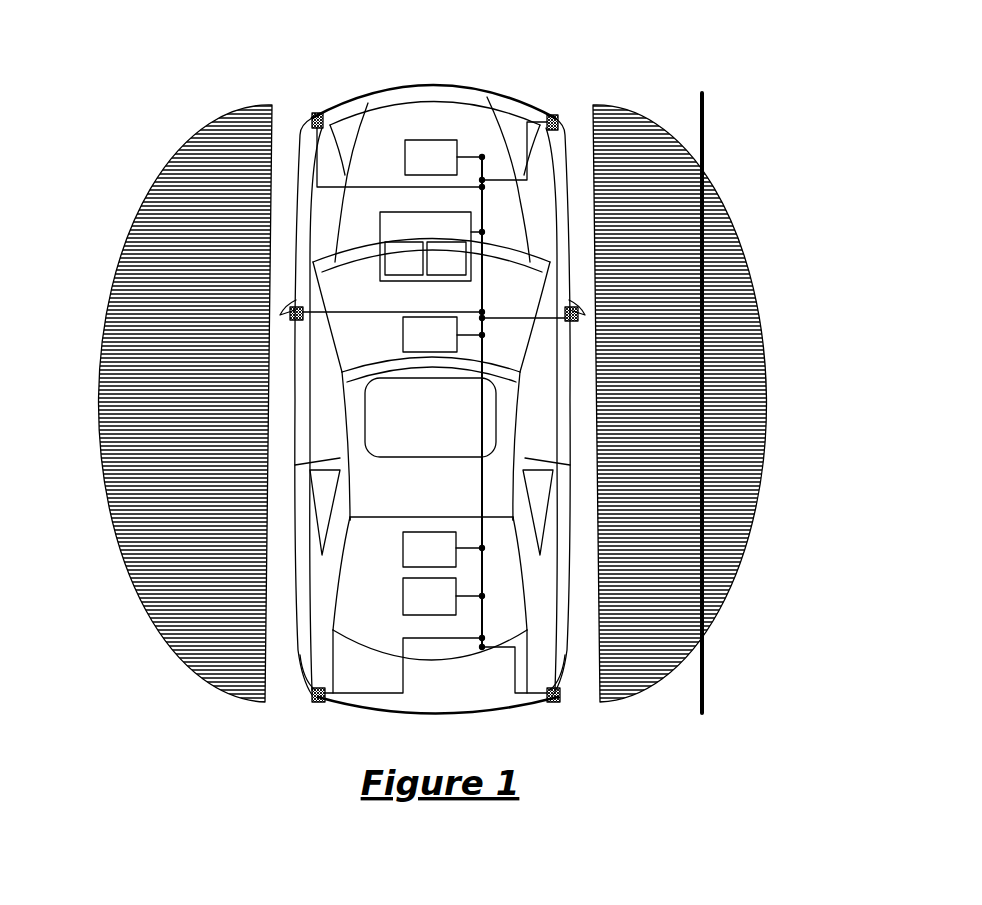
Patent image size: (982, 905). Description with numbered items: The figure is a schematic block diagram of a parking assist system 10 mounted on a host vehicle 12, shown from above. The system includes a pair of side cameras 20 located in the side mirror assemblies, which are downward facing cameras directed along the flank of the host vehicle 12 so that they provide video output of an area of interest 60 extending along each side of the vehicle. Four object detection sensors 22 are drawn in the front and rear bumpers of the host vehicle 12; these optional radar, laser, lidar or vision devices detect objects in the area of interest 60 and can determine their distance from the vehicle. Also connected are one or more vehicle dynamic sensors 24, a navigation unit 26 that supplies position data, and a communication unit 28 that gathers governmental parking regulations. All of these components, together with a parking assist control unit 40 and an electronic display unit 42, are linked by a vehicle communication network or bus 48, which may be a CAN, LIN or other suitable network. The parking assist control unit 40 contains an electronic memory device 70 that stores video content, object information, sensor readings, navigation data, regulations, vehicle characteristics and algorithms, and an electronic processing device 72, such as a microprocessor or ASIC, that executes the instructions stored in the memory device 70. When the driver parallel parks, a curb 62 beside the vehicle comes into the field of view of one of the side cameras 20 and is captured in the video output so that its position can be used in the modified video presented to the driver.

The parking assist system 10 is at (790, 128).
The host vehicle 12 is at (372, 74).
The side cameras 20 is at (312, 298).
The object detection sensors 22 is at (312, 113).
The vehicle dynamic sensors 24 is at (445, 157).
The navigation unit 26 is at (444, 549).
The communication unit 28 is at (444, 596).
The parking assist control unit 40 is at (432, 246).
The electronic display unit 42 is at (444, 334).
The vehicle communication network or bus 48 is at (482, 495).
The area of interest 60 is at (130, 228).
The curb 62 is at (700, 684).
The electronic memory device 70 is at (404, 258).
The electronic processing device 72 is at (446, 258).